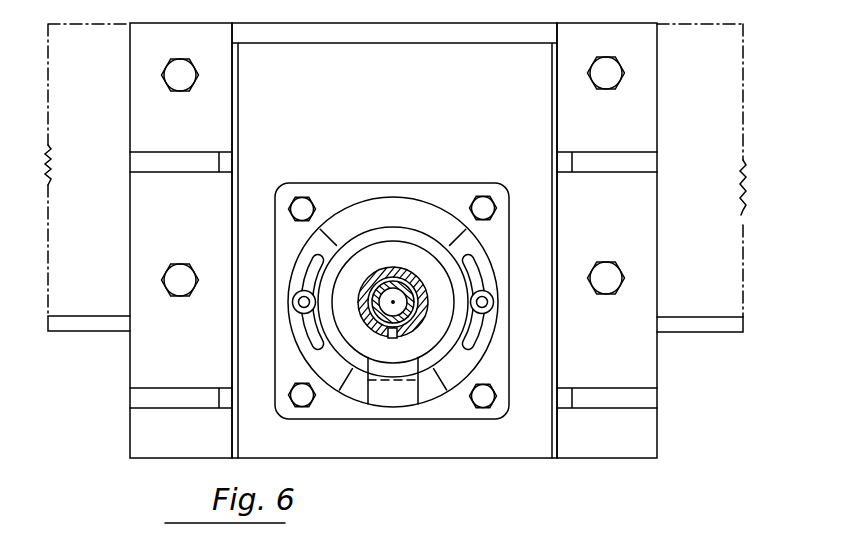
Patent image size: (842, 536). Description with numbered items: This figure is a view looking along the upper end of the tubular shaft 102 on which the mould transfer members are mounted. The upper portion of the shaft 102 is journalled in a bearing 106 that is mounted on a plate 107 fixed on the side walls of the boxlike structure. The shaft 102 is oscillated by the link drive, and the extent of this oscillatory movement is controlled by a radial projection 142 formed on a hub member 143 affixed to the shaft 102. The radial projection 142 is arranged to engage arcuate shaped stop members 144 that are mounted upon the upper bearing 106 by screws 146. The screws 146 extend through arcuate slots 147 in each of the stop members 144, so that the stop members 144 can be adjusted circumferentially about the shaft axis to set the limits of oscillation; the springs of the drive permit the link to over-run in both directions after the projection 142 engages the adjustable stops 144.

The tubular shaft 102 is at (371, 283).
The bearing 106 is at (503, 229).
The plate 107 is at (394, 240).
The radial projection 142 is at (410, 394).
The hub member 143 is at (411, 342).
The arcuate shaped stop members 144 is at (342, 380).
The screws 146 is at (294, 302).
The arcuate slots 147 is at (307, 268).